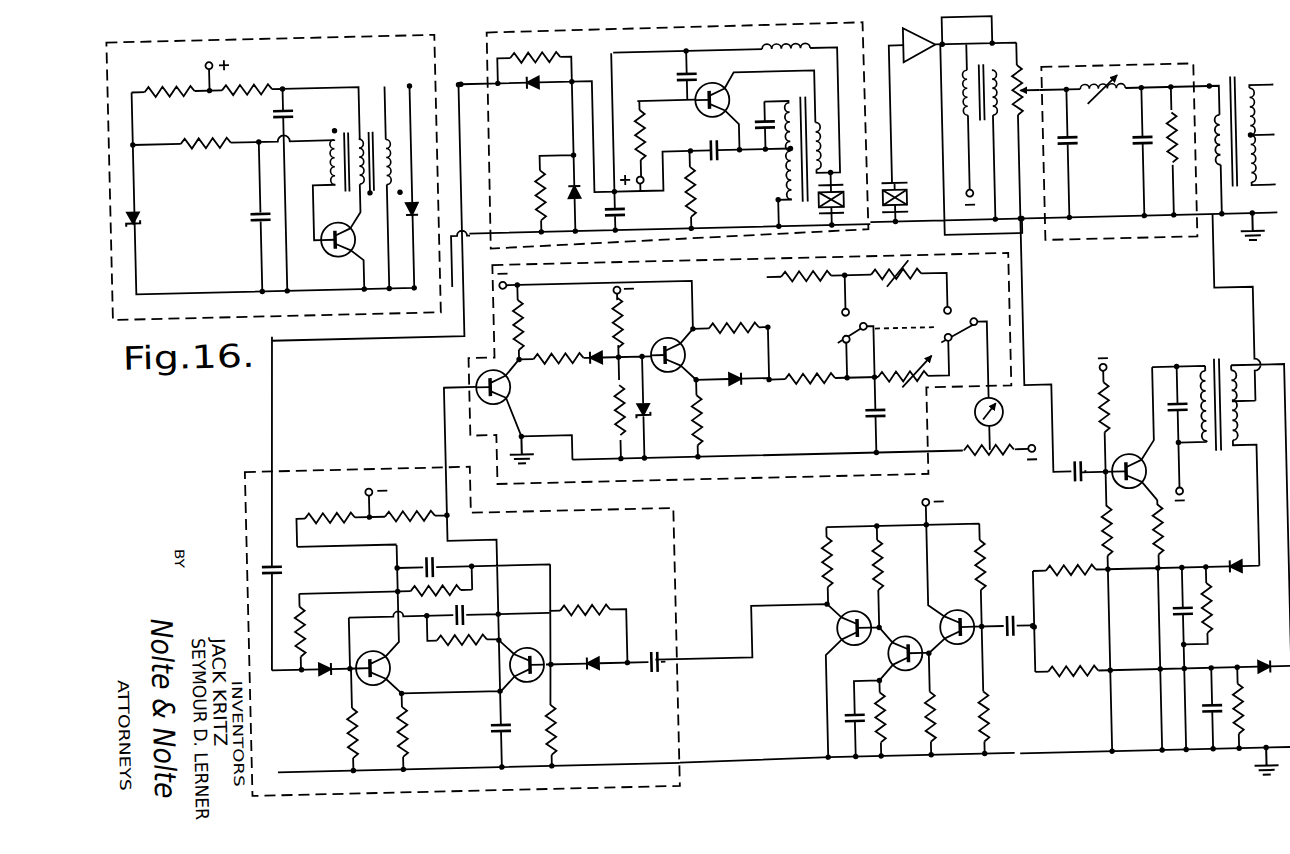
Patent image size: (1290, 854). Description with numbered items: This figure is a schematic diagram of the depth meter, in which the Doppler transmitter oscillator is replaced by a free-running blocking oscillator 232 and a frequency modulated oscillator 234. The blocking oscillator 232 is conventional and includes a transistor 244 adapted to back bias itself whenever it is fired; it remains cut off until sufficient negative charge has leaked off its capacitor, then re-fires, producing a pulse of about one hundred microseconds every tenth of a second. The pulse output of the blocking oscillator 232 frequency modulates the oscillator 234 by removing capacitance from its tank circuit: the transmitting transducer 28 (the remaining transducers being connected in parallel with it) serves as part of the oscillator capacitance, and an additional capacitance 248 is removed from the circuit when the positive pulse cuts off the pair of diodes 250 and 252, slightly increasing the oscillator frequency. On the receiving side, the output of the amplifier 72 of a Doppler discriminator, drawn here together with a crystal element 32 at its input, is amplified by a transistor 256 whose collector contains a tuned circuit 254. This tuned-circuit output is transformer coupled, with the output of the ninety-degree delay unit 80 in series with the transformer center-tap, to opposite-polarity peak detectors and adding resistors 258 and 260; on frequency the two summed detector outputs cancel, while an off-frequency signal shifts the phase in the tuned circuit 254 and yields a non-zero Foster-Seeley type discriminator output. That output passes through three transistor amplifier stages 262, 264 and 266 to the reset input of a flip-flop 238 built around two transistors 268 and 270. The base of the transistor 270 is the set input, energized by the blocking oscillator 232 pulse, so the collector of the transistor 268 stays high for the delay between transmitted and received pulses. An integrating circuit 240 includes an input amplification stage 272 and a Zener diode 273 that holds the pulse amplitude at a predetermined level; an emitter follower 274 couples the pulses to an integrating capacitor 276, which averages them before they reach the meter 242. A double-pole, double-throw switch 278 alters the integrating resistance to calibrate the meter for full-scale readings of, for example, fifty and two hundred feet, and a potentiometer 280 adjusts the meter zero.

The free-running blocking oscillator 232 is at (228, 316).
The transistor 244 is at (354, 254).
The frequency modulated oscillator 234 is at (512, 248).
The diode 252 is at (538, 84).
The diode 250 is at (566, 197).
The capacitance 248 is at (718, 160).
The transducer 28 is at (812, 194).
The amplifier 72 is at (934, 34).
The crystal 32 is at (904, 181).
The ninety-degree delay unit 80 is at (1141, 67).
The integrating circuit 240 is at (929, 262).
The input amplification stage 272 is at (512, 378).
The emitter follower 274 is at (689, 351).
The Zener diode 273 is at (651, 414).
The double-pole, double-throw switch 278 is at (926, 325).
The integrating capacitor 276 is at (866, 421).
The meter 242 is at (1004, 413).
The potentiometer 280 is at (993, 463).
The tuned circuit 254 is at (1221, 366).
The transistor 256 is at (1119, 459).
The adding resistor 258 is at (1082, 563).
The adding resistor 260 is at (1084, 642).
The flip-flop 238 is at (684, 792).
The transistor 270 is at (391, 667).
The transistor 268 is at (507, 669).
The transistor amplifier stage 266 is at (835, 628).
The transistor amplifier stage 264 is at (901, 638).
The transistor amplifier stage 262 is at (958, 613).